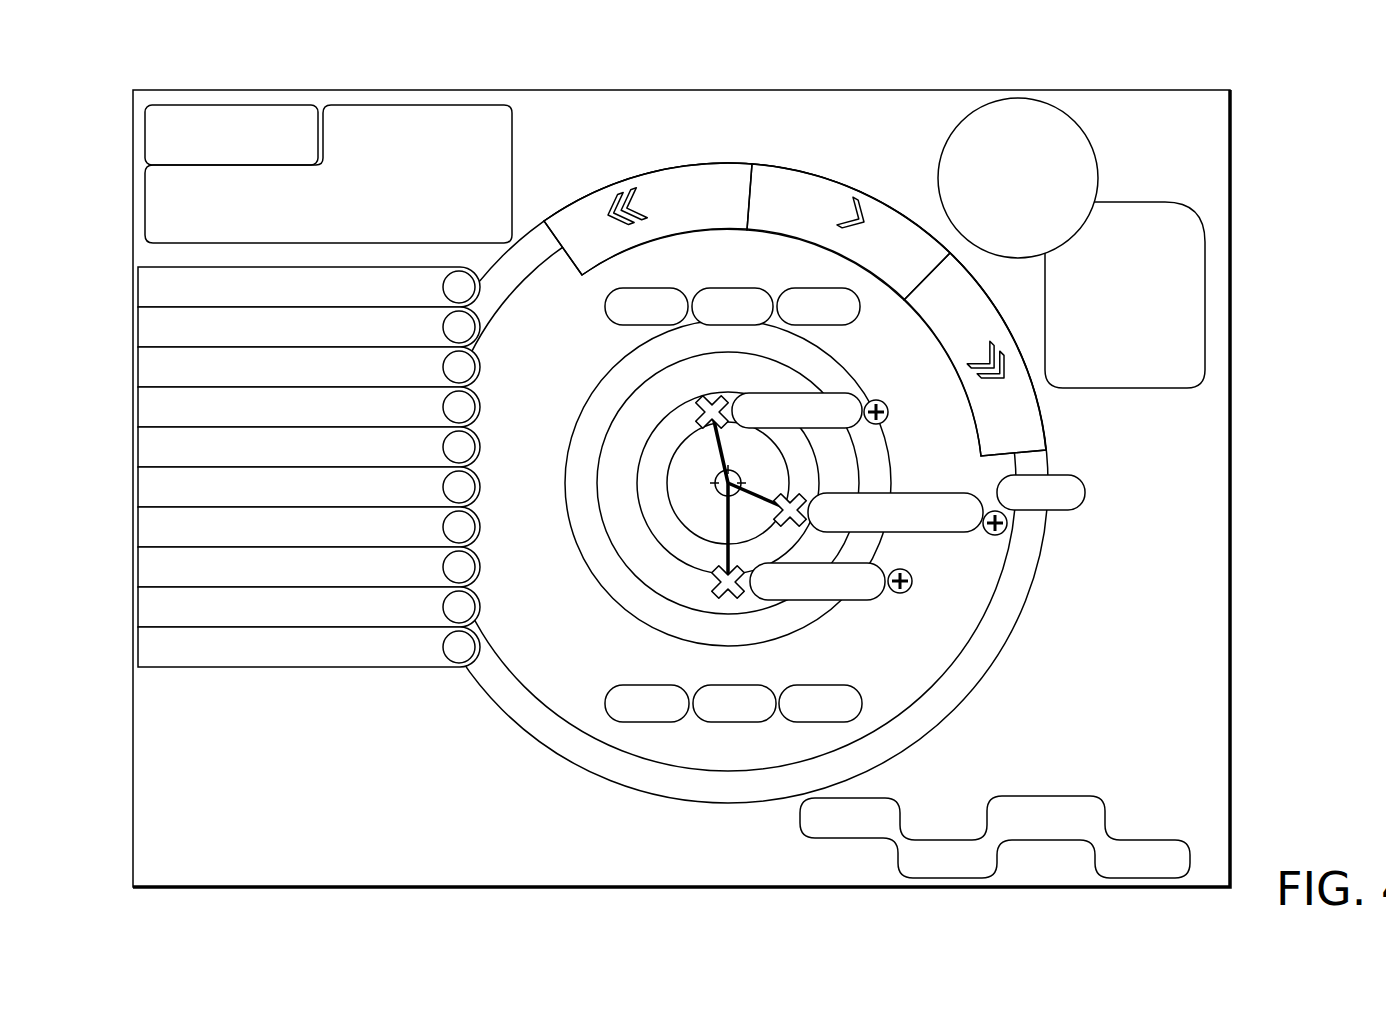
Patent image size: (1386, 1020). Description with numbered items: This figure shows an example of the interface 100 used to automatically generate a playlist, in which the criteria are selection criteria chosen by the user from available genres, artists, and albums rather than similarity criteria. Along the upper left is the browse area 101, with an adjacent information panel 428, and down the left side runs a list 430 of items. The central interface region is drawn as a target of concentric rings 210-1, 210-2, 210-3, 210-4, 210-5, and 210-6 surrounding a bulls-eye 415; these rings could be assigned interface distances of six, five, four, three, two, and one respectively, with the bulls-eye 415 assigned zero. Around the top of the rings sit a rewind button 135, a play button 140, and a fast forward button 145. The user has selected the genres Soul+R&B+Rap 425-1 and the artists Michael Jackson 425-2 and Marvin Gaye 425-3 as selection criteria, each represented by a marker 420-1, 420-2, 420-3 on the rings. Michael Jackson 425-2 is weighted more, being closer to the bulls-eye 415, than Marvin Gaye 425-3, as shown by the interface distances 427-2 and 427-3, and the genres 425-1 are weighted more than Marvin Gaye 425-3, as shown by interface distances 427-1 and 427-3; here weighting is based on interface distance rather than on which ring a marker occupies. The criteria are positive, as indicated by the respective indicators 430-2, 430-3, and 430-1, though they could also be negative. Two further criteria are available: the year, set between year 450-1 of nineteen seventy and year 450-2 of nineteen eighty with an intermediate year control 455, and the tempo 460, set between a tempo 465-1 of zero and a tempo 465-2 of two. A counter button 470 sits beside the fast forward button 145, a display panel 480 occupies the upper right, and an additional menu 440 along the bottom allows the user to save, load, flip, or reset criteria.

The interface 100 is at (1253, 106).
The browse area 101 is at (202, 122).
The information panel 428 is at (444, 120).
The list of items 430 is at (123, 267).
The rewind button 135 is at (727, 210).
The play button 140 is at (911, 257).
The fast forward button 145 is at (1029, 430).
The year 450-1 is at (620, 288).
The middle range button 455 is at (738, 288).
The year 450-2 is at (843, 288).
The marker 420-1 is at (700, 438).
The marker 420-2 is at (785, 512).
The marker 420-3 is at (725, 600).
The interface distance 427-1 is at (693, 398).
The interface distance 427-2 is at (790, 490).
The interface distance 427-3 is at (705, 550).
The concentric ring 210-1 is at (975, 655).
The concentric ring 210-2 is at (987, 604).
The concentric ring 210-3 is at (600, 592).
The concentric ring 210-4 is at (617, 523).
The concentric ring 210-5 is at (645, 480).
The concentric ring 210-6 is at (653, 450).
The genres Soul+R&B+Rap 425-1 is at (808, 392).
The artist Michael Jackson 425-2 is at (935, 533).
The artist Marvin Gaye 425-3 is at (855, 603).
The positive criterion indicator 430-1 is at (889, 412).
The positive criterion indicator 430-2 is at (1008, 533).
The positive criterion indicator 430-3 is at (912, 583).
The bulls-eye 415 is at (741, 477).
The counter button 470 is at (1057, 512).
The display panel 480 is at (1208, 242).
The additional menu 440 is at (1128, 838).
The tempo 465-1 is at (652, 722).
The tempo 460 is at (732, 722).
The tempo 465-2 is at (828, 721).